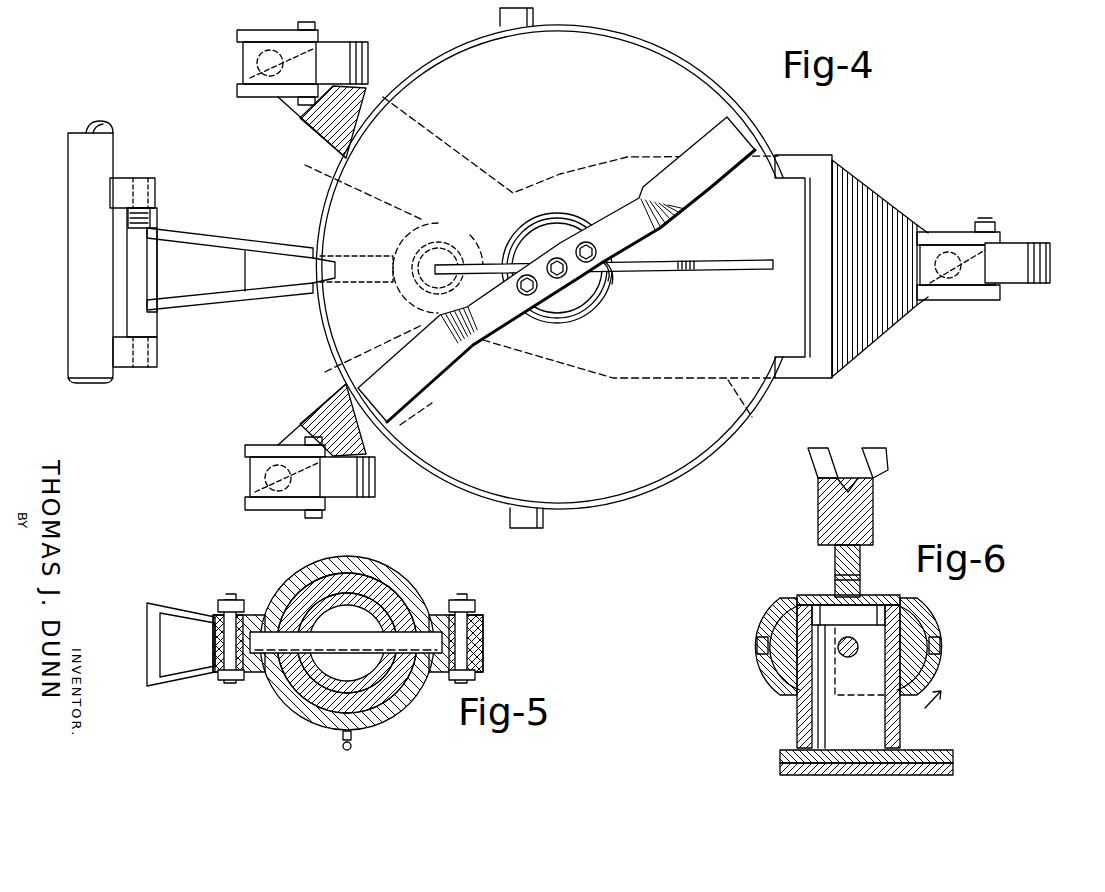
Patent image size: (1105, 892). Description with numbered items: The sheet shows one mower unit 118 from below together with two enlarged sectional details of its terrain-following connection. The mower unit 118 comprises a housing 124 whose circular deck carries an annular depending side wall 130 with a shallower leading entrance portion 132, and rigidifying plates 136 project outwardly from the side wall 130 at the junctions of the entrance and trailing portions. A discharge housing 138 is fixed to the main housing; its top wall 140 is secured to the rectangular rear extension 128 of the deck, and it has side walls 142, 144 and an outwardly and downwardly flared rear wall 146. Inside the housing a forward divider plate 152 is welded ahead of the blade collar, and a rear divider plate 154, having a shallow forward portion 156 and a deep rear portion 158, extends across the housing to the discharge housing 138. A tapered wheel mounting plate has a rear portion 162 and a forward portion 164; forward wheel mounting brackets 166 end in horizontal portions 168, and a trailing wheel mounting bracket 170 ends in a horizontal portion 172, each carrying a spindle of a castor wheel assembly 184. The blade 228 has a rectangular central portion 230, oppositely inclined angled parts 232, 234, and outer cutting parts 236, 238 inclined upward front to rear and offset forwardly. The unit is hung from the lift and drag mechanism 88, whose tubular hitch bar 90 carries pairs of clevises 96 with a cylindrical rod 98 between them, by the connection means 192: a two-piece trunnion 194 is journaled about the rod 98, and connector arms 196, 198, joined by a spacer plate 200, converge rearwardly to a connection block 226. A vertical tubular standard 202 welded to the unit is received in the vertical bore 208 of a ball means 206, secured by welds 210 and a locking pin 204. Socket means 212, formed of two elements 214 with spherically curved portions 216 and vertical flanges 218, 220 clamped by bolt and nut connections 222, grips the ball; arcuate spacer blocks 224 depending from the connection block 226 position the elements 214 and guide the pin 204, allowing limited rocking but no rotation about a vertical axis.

In FIG. 4, the mower assembly lift and drag mechanism 88 is at (97, 388).
In FIG. 4, the tubular hitch bar 90 is at (75, 150).
In FIG. 4, the pairs of clevises 96 is at (157, 190).
In FIG. 4, the cylindrical rod 98 is at (152, 215).
In FIG. 4, the mower unit 118 is at (647, 498).
In FIG. 4, the housing 124 is at (702, 73).
In FIG. 4, the rear extension 128 is at (797, 345).
In FIG. 4, the side wall 130 is at (690, 475).
In FIG. 4, the entrance portion 132 is at (462, 490).
In FIG. 4, the rigidifying plates 136 is at (530, 528).
In FIG. 4, the discharge housing 138 is at (837, 197).
In FIG. 4, the top wall 140 is at (865, 335).
In FIG. 4, the side wall 142 is at (810, 172).
In FIG. 4, the side wall 144 is at (825, 378).
In FIG. 4, the rear wall 146 is at (835, 232).
In FIG. 4, the forward divider plate 152 is at (455, 265).
In FIG. 4, the rear divider plate 154 is at (716, 260).
In FIG. 4, the shallow forward portion 156 is at (650, 272).
In FIG. 4, the deep rear portion 158 is at (742, 273).
In FIG. 4, the rear portion 162 is at (747, 413).
In FIG. 4, the forward portion 164 is at (405, 315).
In FIG. 4, the wheel mounting brackets 166 is at (323, 143).
In FIG. 4, the horizontal portions 168 is at (293, 110).
In FIG. 4, the wheel mounting bracket 170 is at (898, 320).
In FIG. 4, the horizontal portion 172 is at (920, 302).
In FIG. 4, the castor wheel assembly 184 is at (998, 223).
In FIG. 4, the connection means 192 is at (280, 300).
In FIG. 4, the two-piece trunnion 194 is at (150, 293).
In FIG. 4, the connector arm 196 is at (210, 307).
In FIG. 5, the connector arm 196 is at (180, 675).
In FIG. 6, the connector arm 196 is at (810, 473).
In FIG. 4, the connector arm 198 is at (223, 235).
In FIG. 5, the connector arm 198 is at (177, 605).
In FIG. 6, the connector arm 198 is at (875, 458).
In FIG. 4, the spacer plate 200 is at (267, 263).
In FIG. 5, the spacer plate 200 is at (147, 635).
In FIG. 5, the tubular standard 202 is at (332, 600).
In FIG. 6, the tubular standard 202 is at (798, 732).
In FIG. 5, the locking pin 204 is at (367, 637).
In FIG. 6, the locking pin 204 is at (850, 657).
In FIG. 5, the ball means 206 is at (405, 608).
In FIG. 6, the ball means 206 is at (787, 663).
In FIG. 6, the vertical bore 208 is at (890, 593).
In FIG. 6, the welds 210 is at (800, 615).
In FIG. 5, the socket means 212 is at (392, 727).
In FIG. 6, the socket means 212 is at (770, 595).
In FIG. 5, the socket elements 214 is at (307, 555).
In FIG. 5, the spherically curved portion 216 is at (290, 585).
In FIG. 6, the spherically curved portion 216 is at (757, 641).
In FIG. 5, the vertical flange 218 is at (480, 660).
In FIG. 5, the vertical flange 220 is at (253, 677).
In FIG. 5, the bolt and nut connections 222 is at (462, 640).
In FIG. 5, the spacer blocks 224 is at (220, 637).
In FIG. 6, the spacer blocks 224 is at (833, 588).
In FIG. 6, the connection block 226 is at (862, 558).
In FIG. 4, the blade 228 is at (517, 318).
In FIG. 4, the central portion 230 is at (625, 285).
In FIG. 4, the angled part 232 is at (457, 330).
In FIG. 4, the angled part 234 is at (662, 210).
In FIG. 4, the outer cutting part 236 is at (407, 388).
In FIG. 4, the outer cutting part 238 is at (700, 143).